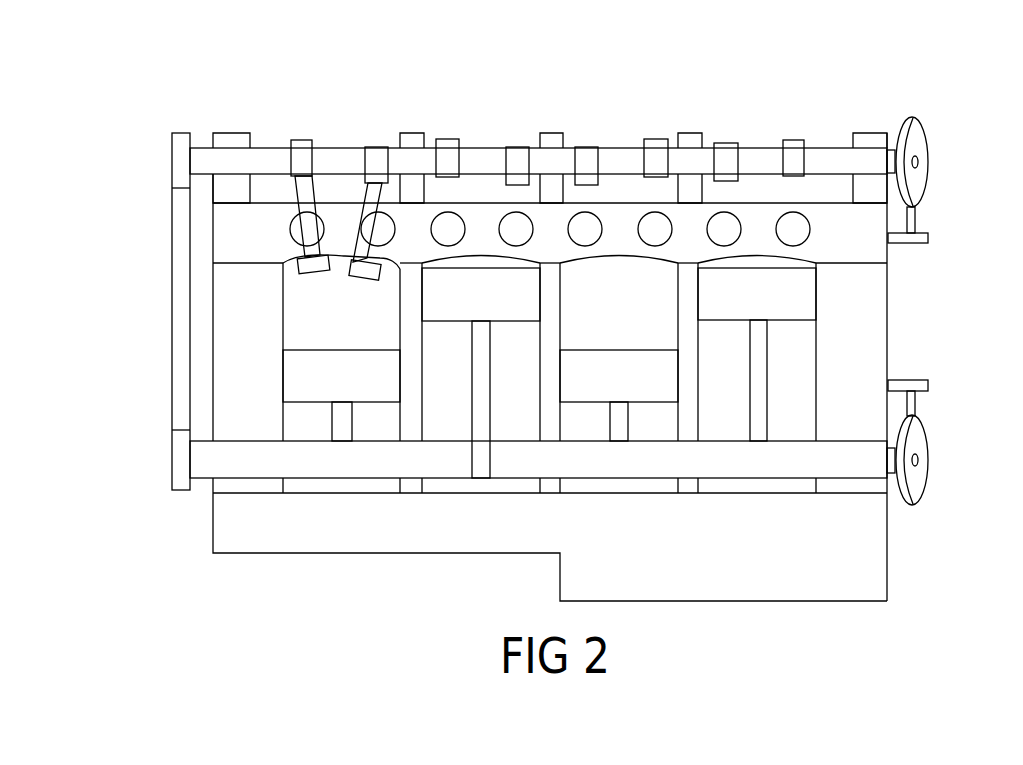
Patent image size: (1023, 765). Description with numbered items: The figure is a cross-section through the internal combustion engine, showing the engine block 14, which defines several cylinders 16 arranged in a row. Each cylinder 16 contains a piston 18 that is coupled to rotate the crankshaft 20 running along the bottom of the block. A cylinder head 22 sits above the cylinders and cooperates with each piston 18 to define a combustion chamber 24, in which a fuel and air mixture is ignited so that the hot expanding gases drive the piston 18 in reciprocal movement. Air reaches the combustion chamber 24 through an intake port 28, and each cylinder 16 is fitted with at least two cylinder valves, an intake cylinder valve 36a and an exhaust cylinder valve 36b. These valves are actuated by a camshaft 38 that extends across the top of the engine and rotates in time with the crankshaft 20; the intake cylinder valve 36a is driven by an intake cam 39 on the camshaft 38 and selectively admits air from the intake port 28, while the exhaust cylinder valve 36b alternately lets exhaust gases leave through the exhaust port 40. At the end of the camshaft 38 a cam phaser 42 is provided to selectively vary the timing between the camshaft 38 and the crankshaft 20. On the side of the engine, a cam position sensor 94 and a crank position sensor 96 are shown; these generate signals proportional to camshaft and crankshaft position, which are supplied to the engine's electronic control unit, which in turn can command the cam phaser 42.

The engine block 14 is at (211, 377).
The cylinder 16 is at (560, 300).
The piston 18 is at (485, 290).
The crankshaft 20 is at (250, 462).
The cylinder head 22 is at (211, 253).
The combustion chamber 24 is at (770, 262).
The intake port 28 is at (585, 212).
The intake cylinder valve 36a is at (295, 263).
The exhaust cylinder valve 36b is at (370, 230).
The camshaft 38 is at (276, 155).
The intake cam 39 is at (302, 157).
The exhaust port 40 is at (515, 212).
The cam phaser 42 is at (182, 132).
The cam position sensor 94 is at (928, 237).
The crank position sensor 96 is at (928, 385).